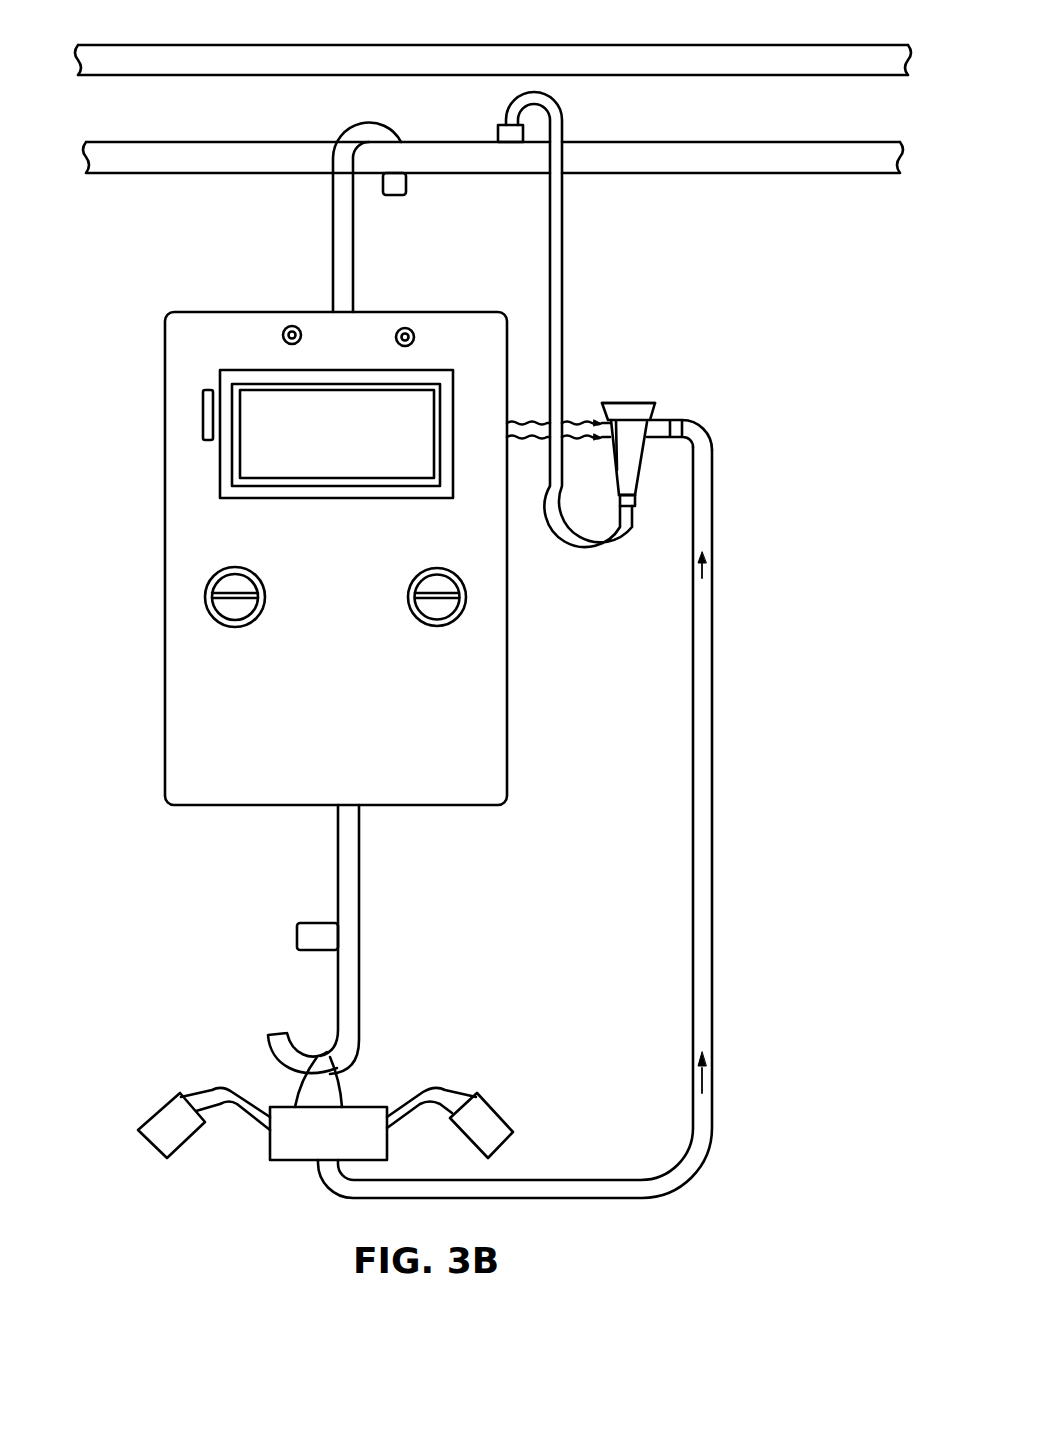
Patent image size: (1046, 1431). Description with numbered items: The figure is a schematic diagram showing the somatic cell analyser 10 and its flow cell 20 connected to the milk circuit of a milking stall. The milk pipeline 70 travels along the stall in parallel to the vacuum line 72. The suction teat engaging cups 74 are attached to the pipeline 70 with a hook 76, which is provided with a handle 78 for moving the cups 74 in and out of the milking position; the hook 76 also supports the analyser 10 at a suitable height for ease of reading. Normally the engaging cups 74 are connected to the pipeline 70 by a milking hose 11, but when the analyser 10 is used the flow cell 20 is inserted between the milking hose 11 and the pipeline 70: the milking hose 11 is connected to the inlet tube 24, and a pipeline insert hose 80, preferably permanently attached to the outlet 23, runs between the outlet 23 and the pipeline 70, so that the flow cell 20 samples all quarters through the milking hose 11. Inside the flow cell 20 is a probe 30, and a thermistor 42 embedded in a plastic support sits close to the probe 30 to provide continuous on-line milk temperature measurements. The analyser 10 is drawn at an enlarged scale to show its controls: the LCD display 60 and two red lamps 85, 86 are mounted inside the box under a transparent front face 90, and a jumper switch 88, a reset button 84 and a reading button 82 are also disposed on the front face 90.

The somatic cell analyser 10 is at (199, 825).
The milking hose 11 is at (712, 699).
The flow cell 20 is at (638, 402).
The outlet 23 is at (634, 477).
The inlet tube 24 is at (662, 418).
The probe 30 is at (613, 402).
The thermistor 42 is at (615, 472).
The LCD display 60 is at (267, 458).
The milk pipeline 70 is at (823, 152).
The vacuum line 72 is at (835, 53).
The engaging cups 74 is at (363, 1117).
The hook 76 is at (352, 981).
The handle 78 is at (310, 937).
The pipeline insert hose 80 is at (563, 237).
The reading button 82 is at (228, 605).
The reset button 84 is at (447, 604).
The red lamp 85 is at (284, 327).
The red lamp 86 is at (409, 329).
The jumper switch 88 is at (203, 413).
The transparent front face 90 is at (437, 716).